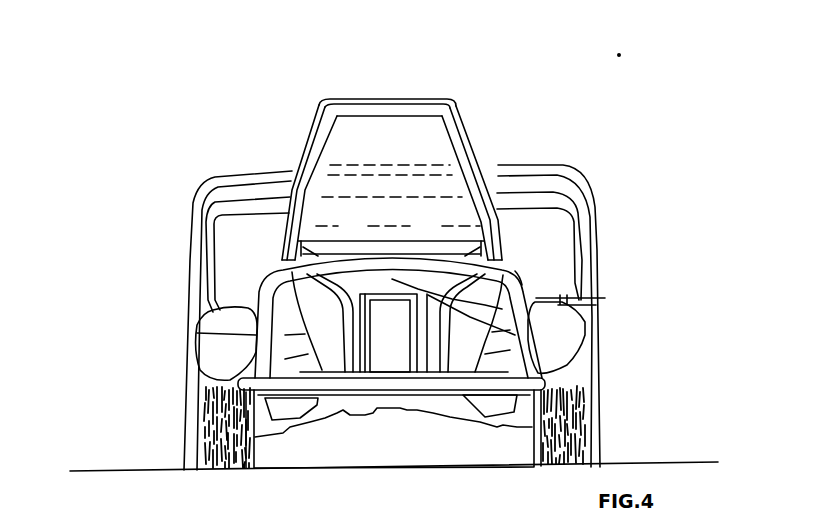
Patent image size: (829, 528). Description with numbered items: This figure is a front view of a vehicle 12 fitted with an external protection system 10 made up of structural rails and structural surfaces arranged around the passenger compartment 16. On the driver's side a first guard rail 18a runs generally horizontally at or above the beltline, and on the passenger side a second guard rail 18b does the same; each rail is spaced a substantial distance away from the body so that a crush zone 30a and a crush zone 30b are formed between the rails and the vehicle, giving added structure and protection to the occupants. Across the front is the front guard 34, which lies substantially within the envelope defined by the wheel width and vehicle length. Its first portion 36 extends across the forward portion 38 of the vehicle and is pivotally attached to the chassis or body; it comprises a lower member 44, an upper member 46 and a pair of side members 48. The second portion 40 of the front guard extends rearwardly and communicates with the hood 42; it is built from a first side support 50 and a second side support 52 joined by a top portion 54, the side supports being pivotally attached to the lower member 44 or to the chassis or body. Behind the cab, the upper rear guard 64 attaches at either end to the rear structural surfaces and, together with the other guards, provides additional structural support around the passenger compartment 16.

The external protection system 10 is at (196, 163).
The vehicle 12 is at (321, 96).
The passenger compartment 16 is at (401, 151).
The first guard rail 18a is at (571, 268).
The second guard rail 18b is at (195, 247).
The crush zone 30a is at (524, 254).
The crush zone 30b is at (255, 259).
The front guard 34 is at (243, 350).
The first portion 36 is at (250, 364).
The forward portion 38 is at (383, 340).
The second portion 40 is at (448, 240).
The hood 42 is at (575, 304).
The lower member 44 is at (387, 383).
The upper member 46 is at (517, 270).
The side members 48 is at (196, 337).
The first side support 50 is at (428, 304).
The second side support 52 is at (322, 287).
The top portion 54 is at (375, 253).
The upper rear guard 64 is at (271, 177).